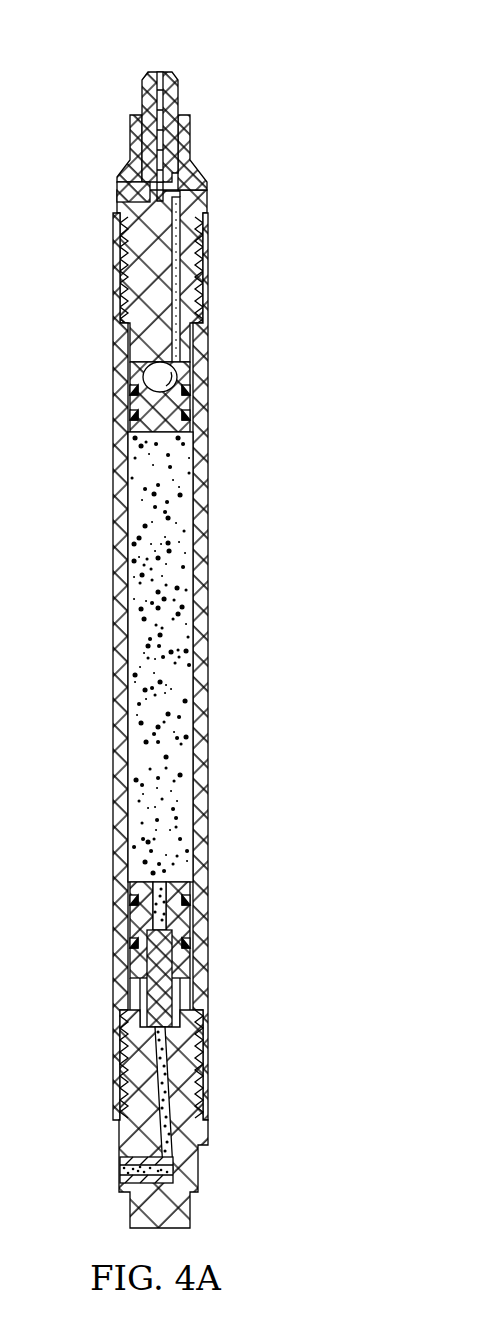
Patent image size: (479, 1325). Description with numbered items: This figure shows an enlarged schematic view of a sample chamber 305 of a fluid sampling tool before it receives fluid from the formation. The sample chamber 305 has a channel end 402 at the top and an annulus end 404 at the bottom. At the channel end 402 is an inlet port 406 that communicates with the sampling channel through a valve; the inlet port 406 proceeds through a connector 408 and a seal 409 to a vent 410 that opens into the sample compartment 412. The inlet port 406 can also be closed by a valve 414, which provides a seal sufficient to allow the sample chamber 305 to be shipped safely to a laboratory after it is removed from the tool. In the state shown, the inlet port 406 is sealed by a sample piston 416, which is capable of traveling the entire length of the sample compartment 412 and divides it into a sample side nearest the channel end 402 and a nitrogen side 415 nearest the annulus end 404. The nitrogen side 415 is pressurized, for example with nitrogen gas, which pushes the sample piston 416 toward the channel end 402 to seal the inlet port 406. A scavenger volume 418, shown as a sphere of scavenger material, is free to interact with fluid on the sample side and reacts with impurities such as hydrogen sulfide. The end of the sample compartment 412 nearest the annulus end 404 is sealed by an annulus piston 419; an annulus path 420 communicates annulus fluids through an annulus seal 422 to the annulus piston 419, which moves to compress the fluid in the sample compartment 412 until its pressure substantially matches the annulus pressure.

The sample chamber 305 is at (170, 633).
The channel end 402 is at (146, 103).
The annulus end 404 is at (179, 1136).
The inlet port 406 is at (178, 100).
The connector 408 is at (142, 103).
The seal 409 is at (125, 174).
The vent 410 is at (178, 370).
The sample compartment 412 is at (193, 660).
The valve 414 is at (117, 190).
The nitrogen side 415 is at (130, 658).
The sample piston 416 is at (135, 413).
The scavenger volume 418 is at (143, 377).
The annulus piston 419 is at (137, 922).
The annulus path 420 is at (176, 1154).
The annulus seal 422 is at (138, 1211).